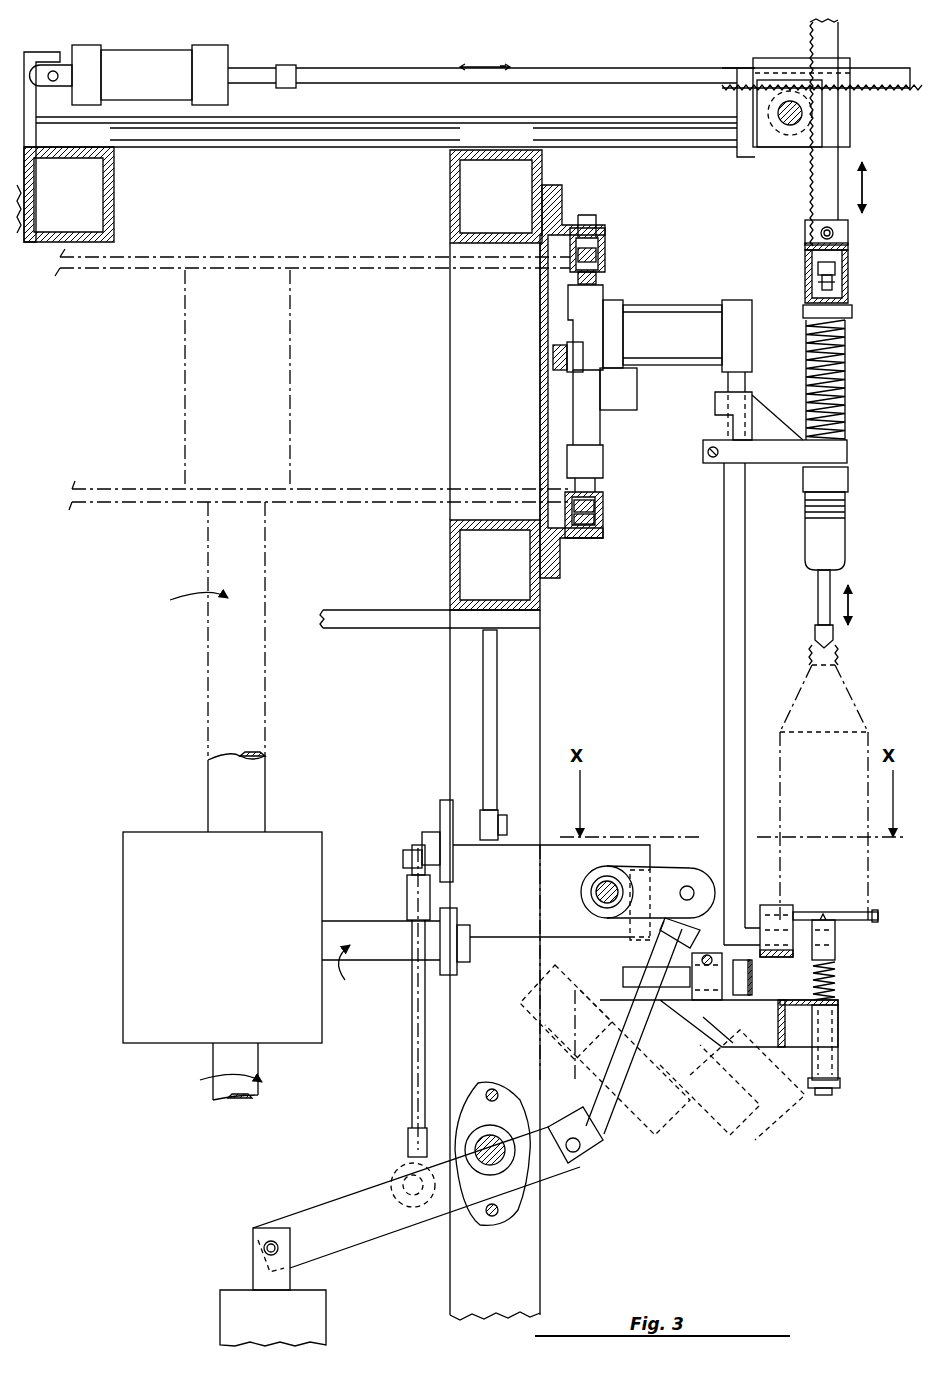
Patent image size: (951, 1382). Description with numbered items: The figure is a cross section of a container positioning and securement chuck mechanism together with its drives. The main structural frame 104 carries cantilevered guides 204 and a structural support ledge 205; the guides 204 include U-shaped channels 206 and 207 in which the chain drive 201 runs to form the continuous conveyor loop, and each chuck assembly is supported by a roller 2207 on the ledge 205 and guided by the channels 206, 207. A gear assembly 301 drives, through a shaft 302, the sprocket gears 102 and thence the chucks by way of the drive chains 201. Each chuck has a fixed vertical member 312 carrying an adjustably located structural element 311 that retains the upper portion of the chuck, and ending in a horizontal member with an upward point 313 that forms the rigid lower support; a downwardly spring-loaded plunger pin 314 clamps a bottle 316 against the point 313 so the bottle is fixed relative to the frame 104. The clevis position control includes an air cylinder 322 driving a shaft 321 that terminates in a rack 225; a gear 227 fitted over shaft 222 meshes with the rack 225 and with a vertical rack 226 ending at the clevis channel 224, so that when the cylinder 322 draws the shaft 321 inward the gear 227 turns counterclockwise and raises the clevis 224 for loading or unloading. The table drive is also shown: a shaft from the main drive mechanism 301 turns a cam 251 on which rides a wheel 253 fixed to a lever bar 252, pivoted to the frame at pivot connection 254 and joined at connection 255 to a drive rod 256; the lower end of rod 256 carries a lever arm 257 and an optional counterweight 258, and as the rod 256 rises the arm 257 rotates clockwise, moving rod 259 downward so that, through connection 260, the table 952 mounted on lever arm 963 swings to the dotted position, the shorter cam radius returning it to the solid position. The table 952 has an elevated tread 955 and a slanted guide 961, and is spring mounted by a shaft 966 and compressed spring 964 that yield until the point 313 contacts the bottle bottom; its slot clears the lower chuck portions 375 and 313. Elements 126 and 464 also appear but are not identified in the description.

The sprocket gears 102 is at (350, 288).
The main structural frame 104 is at (108, 190).
The pinion housing 126 is at (755, 62).
The chain drive 201 is at (600, 258).
The cantilevered guides 204 is at (562, 190).
The structural support ledge 205 is at (567, 398).
The U-shaped channel 206 is at (603, 242).
The U-shaped channel 207 is at (603, 508).
The roller 2207 is at (555, 355).
The shaft 222 is at (780, 120).
The clevis channel 224 is at (806, 270).
The rack 225 is at (878, 78).
The vertical rack 226 is at (822, 42).
The gear 227 is at (800, 145).
The cam 251 is at (432, 1040).
The lever bar 252 is at (442, 810).
The wheel 253 is at (426, 836).
The pivot connection 254 is at (500, 790).
The connection 255 is at (405, 858).
The drive rod 256 is at (412, 896).
The lever arm 257 is at (525, 1125).
The counterweight 258 is at (310, 1323).
The rod 259 is at (598, 1170).
The connecting element 260 is at (665, 870).
The gear assembly 301 is at (125, 860).
The shaft 302 is at (192, 680).
The adjustably located structural element 311 is at (848, 452).
The vertical member 312 is at (724, 640).
The upward point 313 is at (838, 936).
The plunger pin 314 is at (834, 636).
The bottle 316 is at (858, 712).
The shaft 321 is at (412, 76).
The air cylinder 322 is at (158, 63).
The lower portion of chuck mechanism 375 is at (836, 968).
The pivot pin 464 is at (595, 895).
The table 952 is at (876, 908).
The elevated tread portion 955 is at (850, 910).
The slanted guide portion 961 is at (770, 905).
The lever arm 963 is at (640, 948).
The compressed spring 964 is at (838, 1008).
The shaft 966 is at (842, 1080).